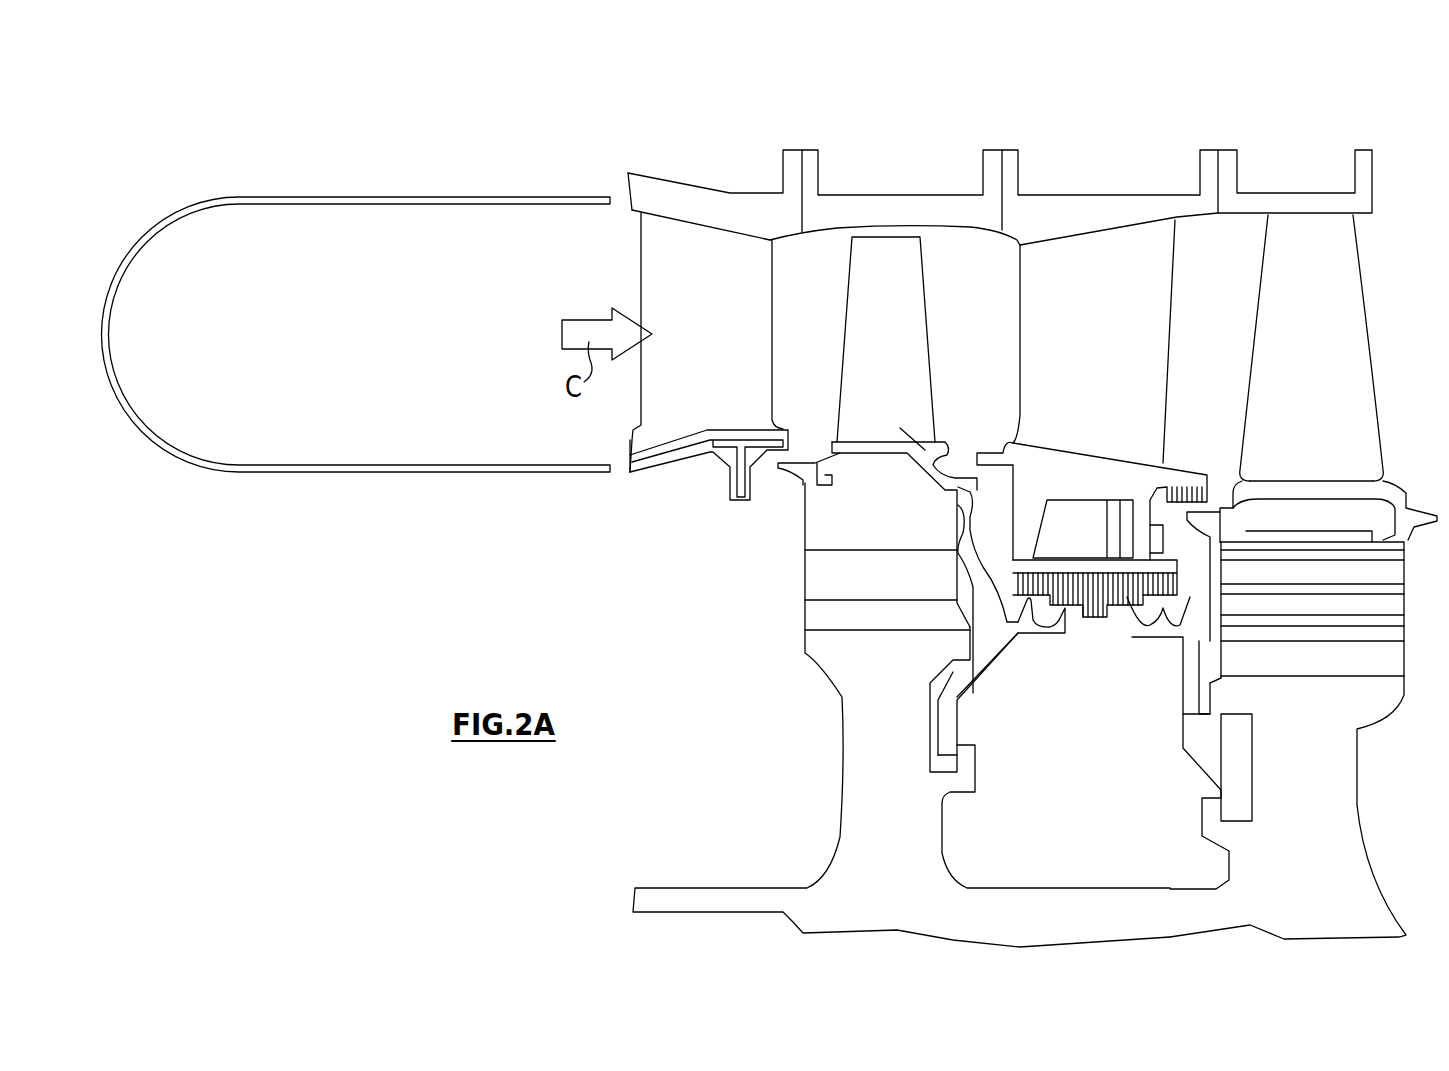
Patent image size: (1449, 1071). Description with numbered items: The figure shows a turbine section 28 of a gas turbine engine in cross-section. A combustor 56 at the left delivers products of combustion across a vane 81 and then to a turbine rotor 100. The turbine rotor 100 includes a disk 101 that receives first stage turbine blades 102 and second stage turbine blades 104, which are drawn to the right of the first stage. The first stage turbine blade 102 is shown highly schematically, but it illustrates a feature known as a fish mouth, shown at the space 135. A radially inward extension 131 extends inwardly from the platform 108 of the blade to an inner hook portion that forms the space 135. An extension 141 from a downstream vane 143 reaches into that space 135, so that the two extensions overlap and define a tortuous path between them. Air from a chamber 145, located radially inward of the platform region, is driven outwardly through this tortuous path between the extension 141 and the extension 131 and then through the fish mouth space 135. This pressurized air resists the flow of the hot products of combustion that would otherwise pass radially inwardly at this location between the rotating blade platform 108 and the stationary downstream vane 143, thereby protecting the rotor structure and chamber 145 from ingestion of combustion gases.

The turbine section 28 is at (714, 80).
The combustor 56 is at (359, 350).
The vane 81 is at (678, 415).
The turbine rotor 100 is at (736, 766).
The disk 101 is at (920, 823).
The first stage turbine blade 102 is at (877, 254).
The second stage turbine blade 104 is at (1355, 330).
The platform 108 is at (913, 443).
The radially inward extension 131 is at (953, 448).
The fish mouth space 135 is at (948, 464).
The extension 141 is at (987, 453).
The downstream vane 143 is at (1118, 308).
The chamber 145 is at (987, 547).